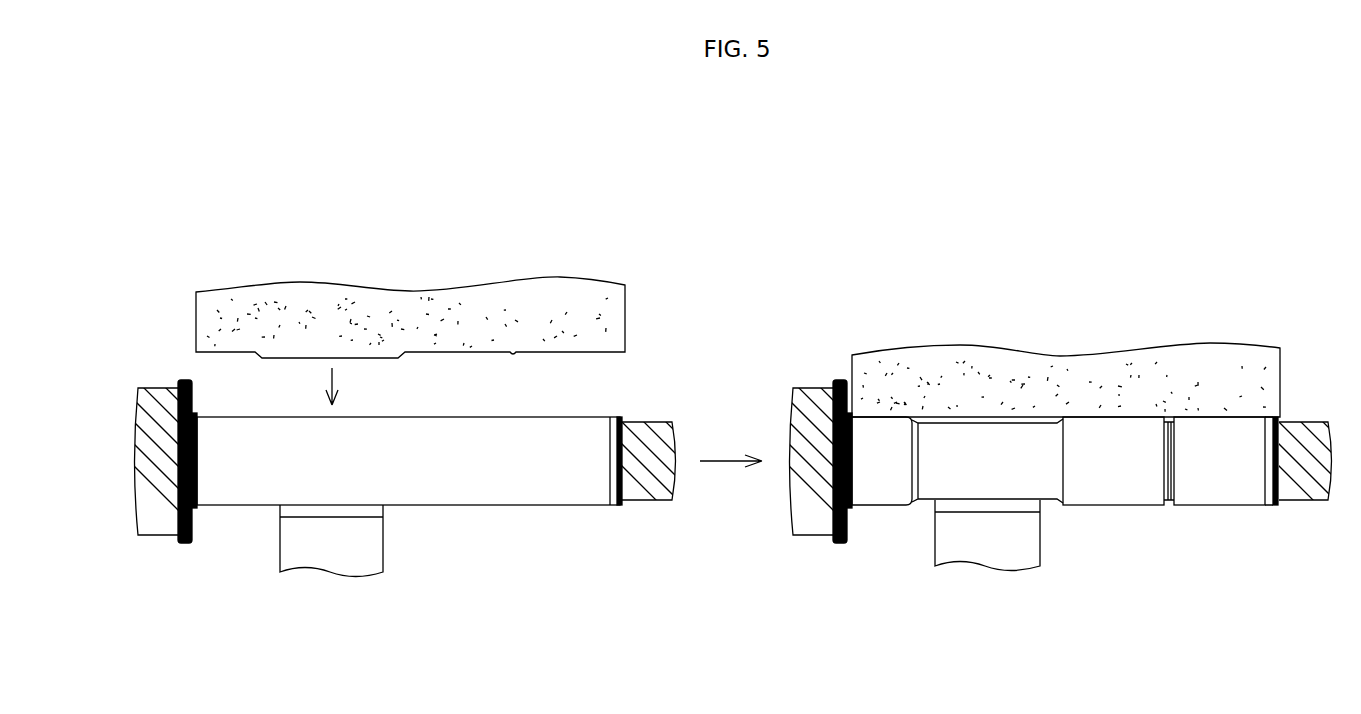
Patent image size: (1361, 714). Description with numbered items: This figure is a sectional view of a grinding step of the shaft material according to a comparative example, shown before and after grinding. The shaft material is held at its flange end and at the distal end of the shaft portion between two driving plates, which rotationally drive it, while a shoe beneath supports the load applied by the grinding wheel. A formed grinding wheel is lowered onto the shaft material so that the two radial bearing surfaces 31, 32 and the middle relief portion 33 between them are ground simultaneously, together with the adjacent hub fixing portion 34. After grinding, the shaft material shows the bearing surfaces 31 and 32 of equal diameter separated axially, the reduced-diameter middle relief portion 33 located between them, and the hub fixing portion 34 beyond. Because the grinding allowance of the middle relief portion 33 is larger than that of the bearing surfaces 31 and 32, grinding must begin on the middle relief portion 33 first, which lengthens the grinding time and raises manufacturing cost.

The radial bearing surface 31 is at (877, 505).
The radial bearing surface 32 is at (1117, 505).
The middle relief portion 33 is at (924, 505).
The hub fixing portion 34 is at (1256, 526).